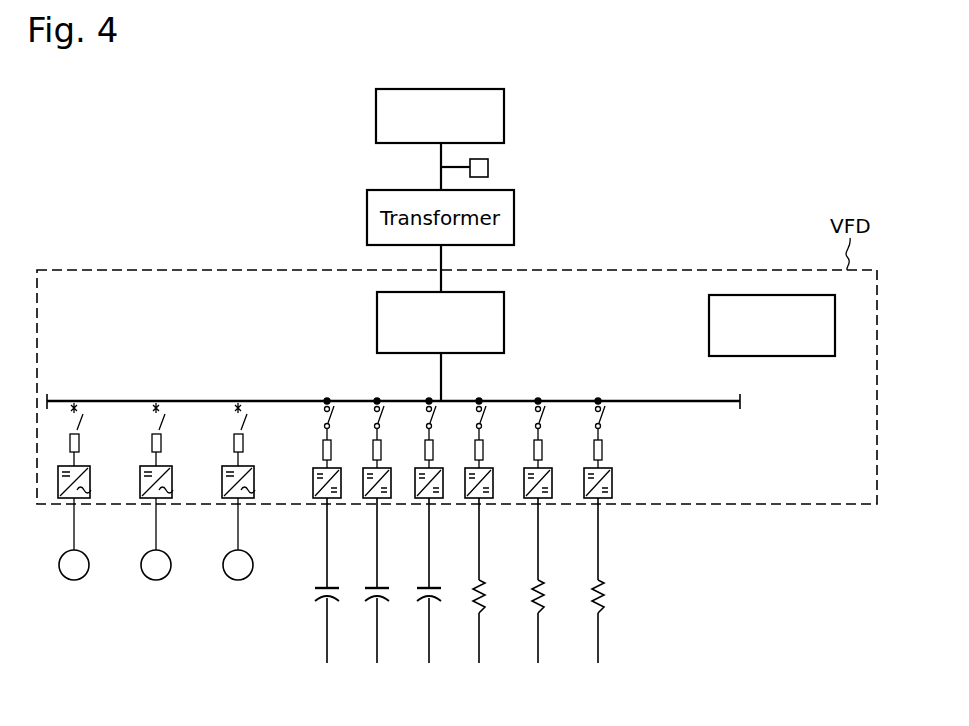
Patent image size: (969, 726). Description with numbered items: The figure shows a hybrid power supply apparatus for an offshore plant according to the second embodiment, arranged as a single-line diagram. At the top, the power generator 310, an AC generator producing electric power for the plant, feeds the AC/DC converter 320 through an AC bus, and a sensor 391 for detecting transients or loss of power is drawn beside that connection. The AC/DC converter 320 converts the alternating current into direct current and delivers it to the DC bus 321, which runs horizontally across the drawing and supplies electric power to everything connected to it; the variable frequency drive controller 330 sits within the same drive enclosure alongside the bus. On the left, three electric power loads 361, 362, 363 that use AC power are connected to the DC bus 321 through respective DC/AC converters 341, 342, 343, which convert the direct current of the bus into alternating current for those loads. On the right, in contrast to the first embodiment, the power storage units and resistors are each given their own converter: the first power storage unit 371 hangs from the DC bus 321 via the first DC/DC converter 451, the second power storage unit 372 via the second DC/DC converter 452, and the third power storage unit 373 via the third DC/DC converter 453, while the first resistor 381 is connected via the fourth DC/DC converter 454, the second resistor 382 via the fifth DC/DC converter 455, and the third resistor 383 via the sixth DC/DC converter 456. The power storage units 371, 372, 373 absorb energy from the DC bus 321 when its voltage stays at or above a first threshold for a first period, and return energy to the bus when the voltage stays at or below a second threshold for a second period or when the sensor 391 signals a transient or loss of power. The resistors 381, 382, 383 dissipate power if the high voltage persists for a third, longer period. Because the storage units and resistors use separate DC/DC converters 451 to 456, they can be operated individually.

The power generator 310 is at (504, 114).
The sensor 391 is at (488, 166).
The AC/DC converter 320 is at (504, 318).
The variable frequency drive (VFD) controller 330 is at (709, 318).
The DC bus 321 is at (686, 401).
The DC/AC converter 341 is at (96, 458).
The DC/AC converter 342 is at (178, 458).
The DC/AC converter 343 is at (260, 458).
The first DC/DC converter 451 is at (349, 456).
The second DC/DC converter 452 is at (399, 456).
The third DC/DC converter 453 is at (451, 456).
The fourth DC/DC converter 454 is at (501, 456).
The fifth DC/DC converter 455 is at (560, 456).
The sixth DC/DC converter 456 is at (620, 456).
The electric power load 361 is at (96, 540).
The electric power load 362 is at (178, 540).
The electric power load 363 is at (260, 540).
The first power storage unit 371 is at (315, 588).
The second power storage unit 372 is at (365, 588).
The third power storage unit 373 is at (417, 588).
The first resistor 381 is at (481, 612).
The second resistor 382 is at (540, 612).
The third resistor 383 is at (600, 612).